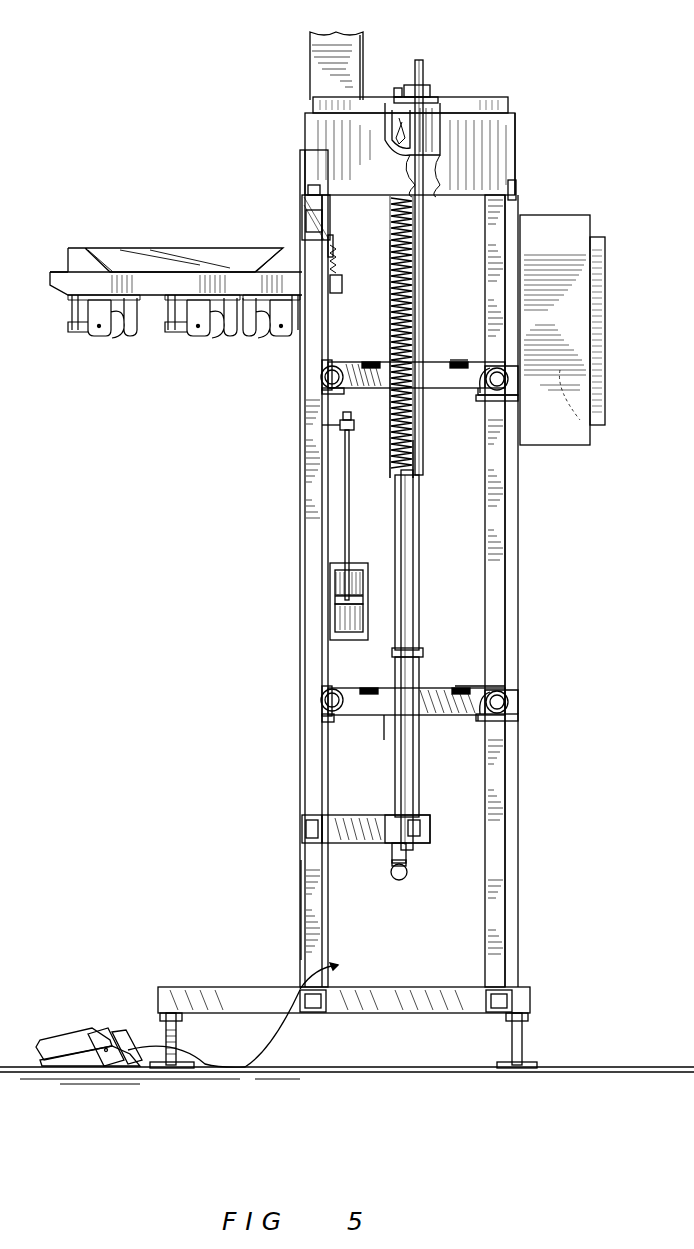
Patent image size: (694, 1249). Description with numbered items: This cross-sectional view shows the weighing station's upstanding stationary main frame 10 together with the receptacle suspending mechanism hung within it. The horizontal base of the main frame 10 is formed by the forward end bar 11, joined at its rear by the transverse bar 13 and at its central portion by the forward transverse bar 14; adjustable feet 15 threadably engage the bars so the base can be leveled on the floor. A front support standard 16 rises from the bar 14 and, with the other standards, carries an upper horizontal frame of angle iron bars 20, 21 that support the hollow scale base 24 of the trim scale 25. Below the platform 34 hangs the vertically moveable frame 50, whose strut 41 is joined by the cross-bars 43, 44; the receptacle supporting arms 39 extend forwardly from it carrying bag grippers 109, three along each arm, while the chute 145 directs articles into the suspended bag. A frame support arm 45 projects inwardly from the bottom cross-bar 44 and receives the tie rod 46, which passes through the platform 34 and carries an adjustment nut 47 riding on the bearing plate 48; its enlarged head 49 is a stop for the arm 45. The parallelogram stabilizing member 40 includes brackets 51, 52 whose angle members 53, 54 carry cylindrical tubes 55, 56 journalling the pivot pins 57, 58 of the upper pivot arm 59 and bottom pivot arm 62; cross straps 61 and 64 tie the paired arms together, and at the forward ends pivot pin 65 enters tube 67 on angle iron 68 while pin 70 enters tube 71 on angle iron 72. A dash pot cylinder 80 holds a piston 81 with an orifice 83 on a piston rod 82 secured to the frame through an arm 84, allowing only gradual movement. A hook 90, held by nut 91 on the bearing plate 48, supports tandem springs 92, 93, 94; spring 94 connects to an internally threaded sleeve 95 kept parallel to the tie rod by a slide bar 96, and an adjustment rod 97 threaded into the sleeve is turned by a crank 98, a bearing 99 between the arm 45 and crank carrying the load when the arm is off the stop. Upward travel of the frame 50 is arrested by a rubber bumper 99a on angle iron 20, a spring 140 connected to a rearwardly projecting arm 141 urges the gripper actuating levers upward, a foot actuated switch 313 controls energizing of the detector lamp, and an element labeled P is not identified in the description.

The main frame 10 is at (516, 582).
The forward end bar 11 is at (258, 992).
The transverse bar 13 is at (488, 1014).
The forward transverse bar 14 is at (312, 1012).
The adjustable feet 15 is at (178, 1046).
The front support standard 16 is at (303, 868).
The angle iron bar 20 is at (302, 195).
The angle iron bar 21 is at (517, 192).
The hollow scale base 24 is at (516, 154).
The trim scale 25 is at (308, 60).
The platform 34 is at (492, 97).
The receptacle supporting arms 39 is at (236, 246).
The parallelogram stabilizing member 40 is at (430, 688).
The strut 41 is at (305, 510).
The cross-bar 43 is at (303, 236).
The bottom cross-bar 44 is at (302, 830).
The frame support arm 45 is at (338, 834).
The tie rod arresting member 46 is at (420, 572).
The adjustment nut 47 is at (425, 84).
The bearing plate 48 is at (436, 100).
The enlarged head 49 is at (420, 830).
The vertically moveable frame 50 is at (248, 680).
The bracket 51 is at (480, 398).
The bracket 52 is at (480, 722).
The angle member 53 is at (470, 370).
The angle member 54 is at (480, 688).
The cylindrical tube 55 is at (520, 398).
The cylindrical tube 56 is at (510, 701).
The pivot pin 57 is at (508, 378).
The pivot pin 58 is at (515, 721).
The upper pivot arm 59 is at (462, 362).
The cross straps 61 is at (374, 360).
The bottom pivot arm 62 is at (384, 716).
The cross straps 64 is at (372, 686).
The pivot pin 65 is at (320, 704).
The tube 67 is at (333, 716).
The angle iron 68 is at (322, 720).
The pin 70 is at (320, 376).
The tube 71 is at (326, 392).
The angle iron 72 is at (328, 360).
The dash pot cylinder 80 is at (330, 590).
The piston 81 is at (362, 600).
The piston rod 82 is at (350, 522).
The orifice or valve 83 is at (340, 610).
The arm 84 is at (355, 422).
The hook 90 is at (395, 120).
The nut 91 is at (418, 62).
The spring 92 is at (413, 242).
The spring 93 is at (391, 284).
The spring 94 is at (392, 418).
The internally threaded sleeve 95 is at (400, 530).
The slide bar 96 is at (418, 650).
The adjustment rod 97 is at (397, 780).
The crank 98 is at (390, 870).
The bearing 99 is at (407, 855).
The rubber bumper 99a is at (308, 188).
The gripper 109 is at (112, 338).
The spring 140 is at (336, 260).
The rearwardly projecting arm 141 is at (333, 242).
The chute 145 is at (185, 254).
The foot actuated switch 313 is at (84, 1034).
The platen P is at (596, 350).